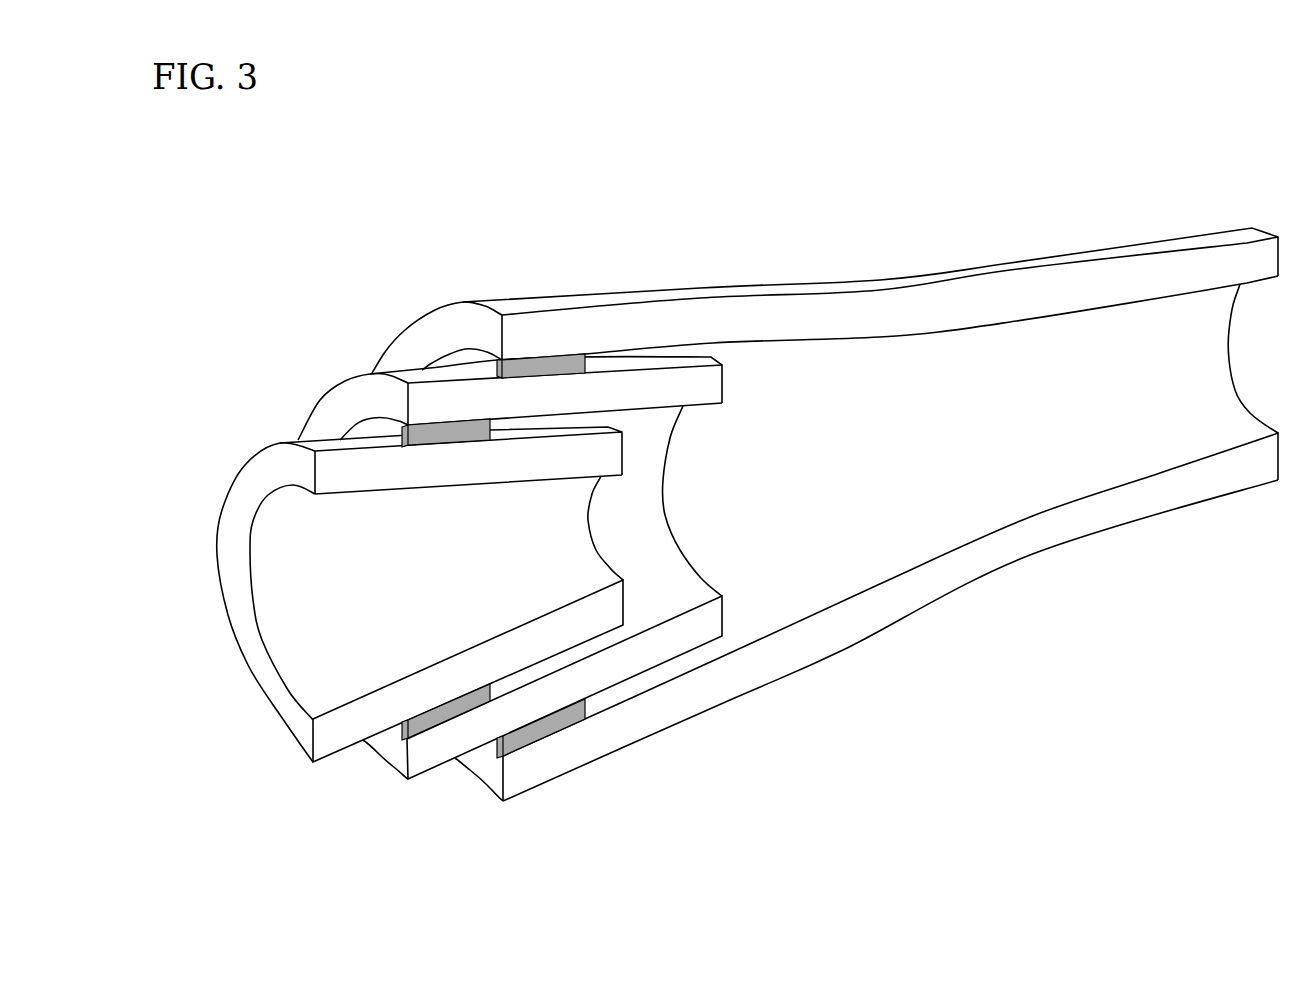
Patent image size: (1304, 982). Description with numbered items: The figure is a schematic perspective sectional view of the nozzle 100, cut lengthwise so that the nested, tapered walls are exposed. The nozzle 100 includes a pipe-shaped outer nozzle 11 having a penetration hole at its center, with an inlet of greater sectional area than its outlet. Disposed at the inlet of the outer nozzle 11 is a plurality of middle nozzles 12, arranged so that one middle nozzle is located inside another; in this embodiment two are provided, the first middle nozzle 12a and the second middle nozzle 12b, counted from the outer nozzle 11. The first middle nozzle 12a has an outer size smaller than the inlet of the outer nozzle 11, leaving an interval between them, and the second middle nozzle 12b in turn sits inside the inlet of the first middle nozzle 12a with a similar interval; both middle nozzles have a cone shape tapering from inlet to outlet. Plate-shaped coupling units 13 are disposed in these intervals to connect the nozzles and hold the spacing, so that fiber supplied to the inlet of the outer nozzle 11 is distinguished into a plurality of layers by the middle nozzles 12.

The nozzle 100 is at (956, 195).
The outer nozzle 11 is at (792, 313).
The middle nozzles 12 is at (395, 207).
The first middle nozzle 12a is at (440, 397).
The second middle nozzle 12b is at (348, 470).
The coupling unit 13 is at (553, 358).